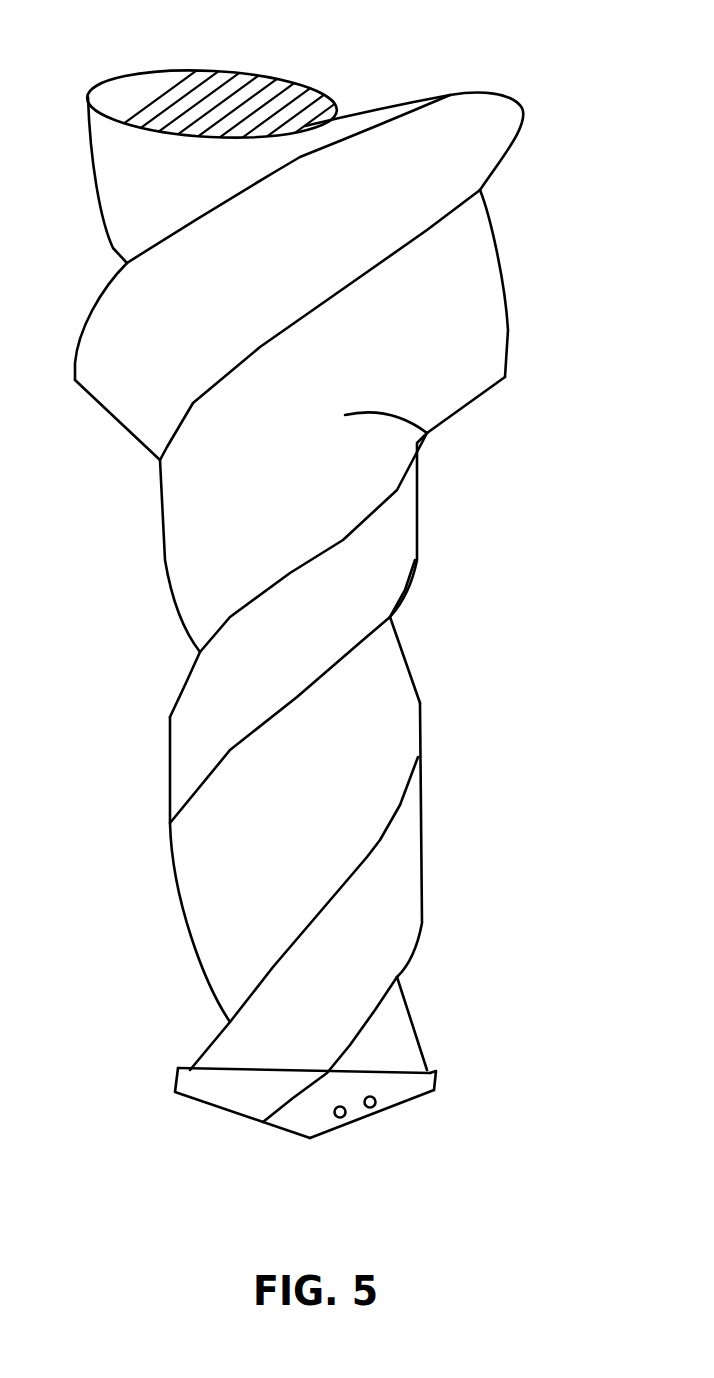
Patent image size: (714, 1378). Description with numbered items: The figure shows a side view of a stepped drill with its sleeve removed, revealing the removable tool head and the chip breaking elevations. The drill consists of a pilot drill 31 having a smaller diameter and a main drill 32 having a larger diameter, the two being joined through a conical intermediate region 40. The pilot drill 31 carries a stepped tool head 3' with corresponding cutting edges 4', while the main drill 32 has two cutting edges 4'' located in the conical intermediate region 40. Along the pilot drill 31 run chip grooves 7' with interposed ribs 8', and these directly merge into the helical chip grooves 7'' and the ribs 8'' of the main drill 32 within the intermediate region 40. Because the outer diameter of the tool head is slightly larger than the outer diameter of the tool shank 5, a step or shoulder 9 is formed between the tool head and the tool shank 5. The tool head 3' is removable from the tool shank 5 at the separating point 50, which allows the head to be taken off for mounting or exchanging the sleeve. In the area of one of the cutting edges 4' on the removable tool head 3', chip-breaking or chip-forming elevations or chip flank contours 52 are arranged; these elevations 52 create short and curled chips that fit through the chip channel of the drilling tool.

The main drill 32 is at (493, 203).
The pilot drill 31 is at (428, 732).
The ribs of the main drill 8'' is at (256, 110).
The ribs of the pilot drill 8' is at (249, 575).
The helical chip grooves of the main drill 7'' is at (379, 325).
The chip grooves of the pilot drill 7' is at (237, 707).
The cutting edges of the main drill 4'' is at (301, 437).
The cutting edges of the tool head 4' is at (275, 982).
The conical intermediate region 40 is at (427, 433).
The tool shank 5 is at (378, 678).
The step or shoulder 9 is at (178, 1068).
The separating point 50 is at (383, 1072).
The chip-breaking elevations or chip flank contours 52 is at (370, 1108).
The stepped tool head 3' is at (406, 1143).